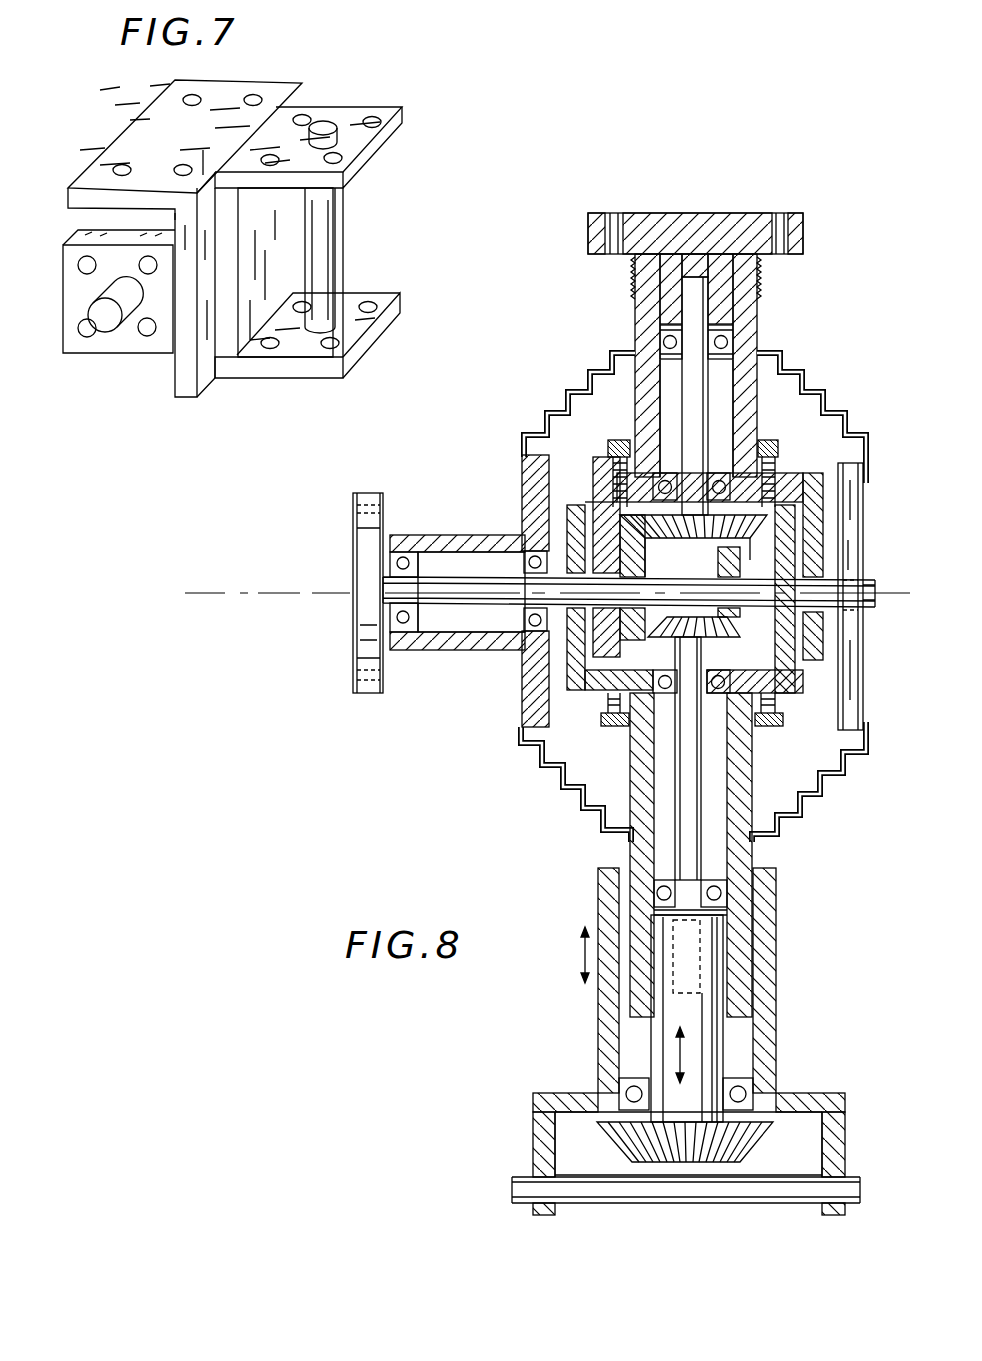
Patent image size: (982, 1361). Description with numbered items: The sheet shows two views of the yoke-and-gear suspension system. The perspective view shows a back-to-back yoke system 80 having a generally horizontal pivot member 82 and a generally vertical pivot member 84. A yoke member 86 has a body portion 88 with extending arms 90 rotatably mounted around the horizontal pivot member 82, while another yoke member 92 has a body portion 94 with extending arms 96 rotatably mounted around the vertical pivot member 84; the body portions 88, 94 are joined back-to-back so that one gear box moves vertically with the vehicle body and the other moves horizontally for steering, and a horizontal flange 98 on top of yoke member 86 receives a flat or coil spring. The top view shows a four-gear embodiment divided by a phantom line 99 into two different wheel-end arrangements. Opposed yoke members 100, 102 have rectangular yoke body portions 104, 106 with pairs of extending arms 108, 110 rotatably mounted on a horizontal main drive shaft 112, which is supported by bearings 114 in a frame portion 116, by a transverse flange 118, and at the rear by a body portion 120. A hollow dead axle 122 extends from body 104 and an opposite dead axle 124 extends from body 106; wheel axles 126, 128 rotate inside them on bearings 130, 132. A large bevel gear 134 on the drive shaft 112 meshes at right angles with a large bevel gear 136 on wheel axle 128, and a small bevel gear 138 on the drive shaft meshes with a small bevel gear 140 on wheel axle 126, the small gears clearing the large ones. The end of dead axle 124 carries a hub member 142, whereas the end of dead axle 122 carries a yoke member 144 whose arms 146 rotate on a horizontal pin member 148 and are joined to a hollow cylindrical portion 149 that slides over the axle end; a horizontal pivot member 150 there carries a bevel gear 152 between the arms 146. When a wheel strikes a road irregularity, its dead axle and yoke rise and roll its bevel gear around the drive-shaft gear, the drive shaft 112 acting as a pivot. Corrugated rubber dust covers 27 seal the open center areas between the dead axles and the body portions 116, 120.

In FIG. 7, the back-to-back yoke system 80 is at (62, 300).
In FIG. 7, the horizontal pivot member 82 is at (104, 318).
In FIG. 7, the vertical pivot member 84 is at (330, 253).
In FIG. 7, the yoke member 86 is at (137, 114).
In FIG. 7, the body portion 88 is at (300, 97).
In FIG. 7, the extending arms 90 is at (120, 345).
In FIG. 7, the yoke member 92 is at (406, 144).
In FIG. 7, the body portion 94 is at (250, 345).
In FIG. 7, the extending arms 96 is at (362, 160).
In FIG. 7, the horizontal flange 98 is at (142, 128).
In FIG. 8, the phantom line 99 is at (225, 593).
In FIG. 8, the yoke member 100 is at (811, 692).
In FIG. 8, the yoke member 102 is at (825, 469).
In FIG. 8, the yoke body portion 104 is at (786, 694).
In FIG. 8, the yoke body portion 106 is at (827, 468).
In FIG. 8, the extending arms 108 is at (788, 678).
In FIG. 8, the extending arms 110 is at (818, 508).
In FIG. 8, the main drive shaft 112 is at (482, 583).
In FIG. 8, the bearings 114 is at (404, 557).
In FIG. 8, the frame portion 116 is at (435, 652).
In FIG. 8, the transverse flange 118 is at (365, 594).
In FIG. 8, the body portion 120 is at (857, 552).
In FIG. 8, the dead axle 122 is at (733, 847).
In FIG. 8, the dead axle 124 is at (748, 288).
In FIG. 8, the wheel axle 126 is at (682, 858).
In FIG. 8, the wheel axle 128 is at (690, 380).
In FIG. 8, the bearings 130 is at (717, 893).
In FIG. 8, the bearings 132 is at (727, 343).
In FIG. 8, the large bevel gear 134 is at (627, 643).
In FIG. 8, the large bevel gear 136 is at (632, 512).
In FIG. 8, the small bevel gear 138 is at (727, 567).
In FIG. 8, the small bevel gear 140 is at (713, 637).
In FIG. 8, the hub member 142 is at (730, 223).
In FIG. 8, the yoke member 144 is at (805, 1084).
In FIG. 8, the arms 146 is at (540, 1120).
In FIG. 8, the horizontal pin member 148 is at (860, 1203).
In FIG. 8, the hollow cylindrical portion 149 is at (602, 1040).
In FIG. 8, the horizontal pivot member 150 is at (708, 1040).
In FIG. 8, the bevel gear 152 is at (753, 1143).
In FIG. 8, the corrugated rubber dust covers 27 is at (798, 370).